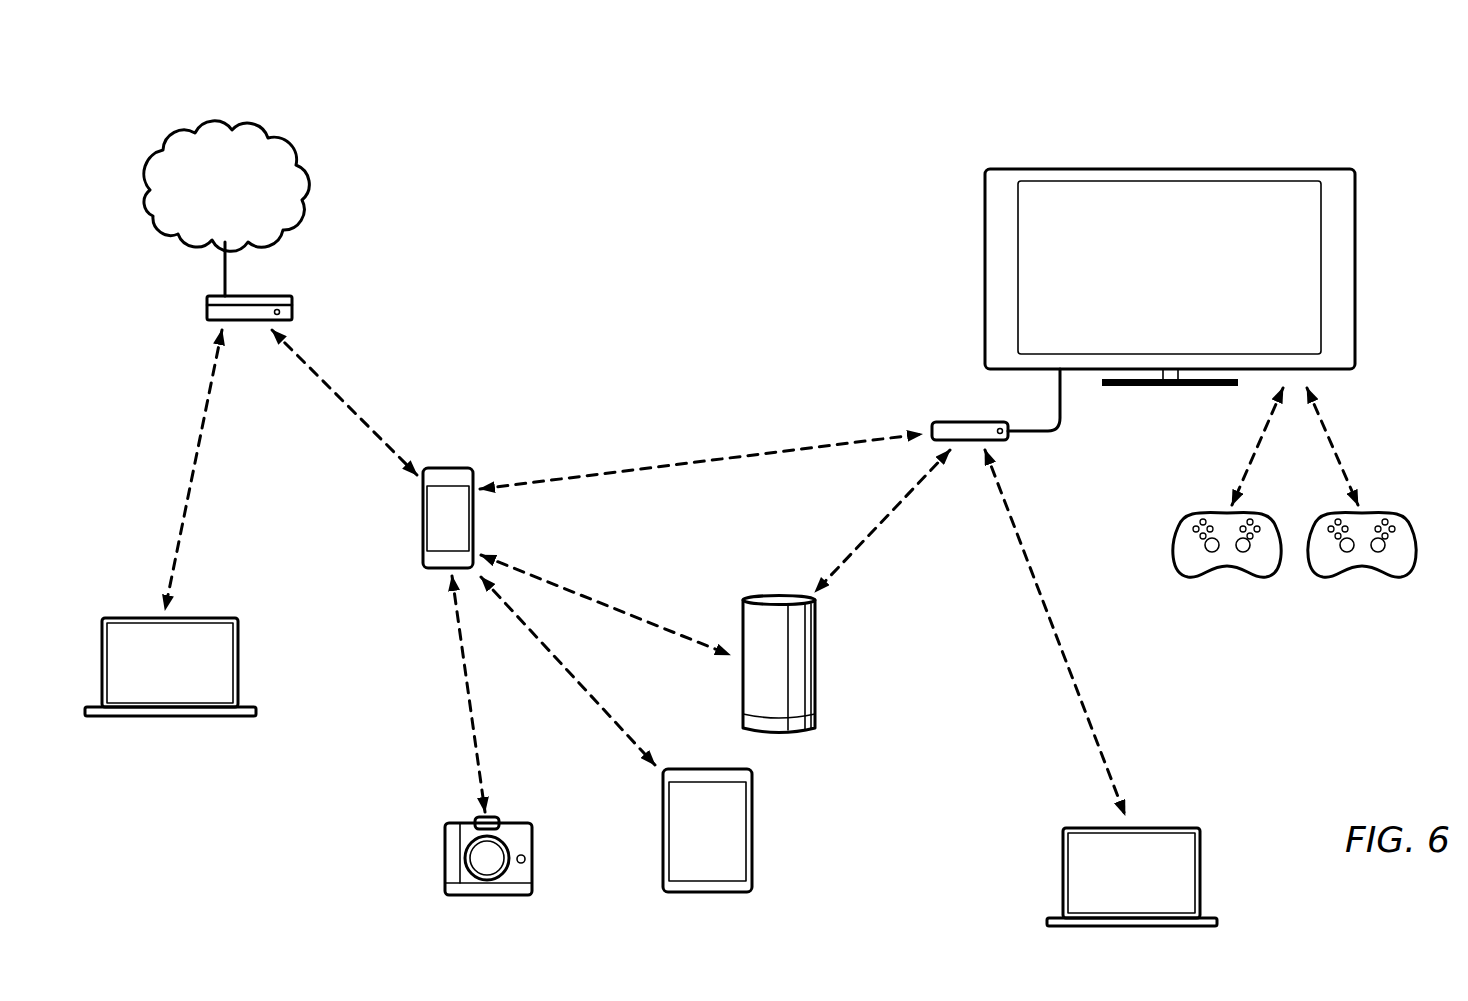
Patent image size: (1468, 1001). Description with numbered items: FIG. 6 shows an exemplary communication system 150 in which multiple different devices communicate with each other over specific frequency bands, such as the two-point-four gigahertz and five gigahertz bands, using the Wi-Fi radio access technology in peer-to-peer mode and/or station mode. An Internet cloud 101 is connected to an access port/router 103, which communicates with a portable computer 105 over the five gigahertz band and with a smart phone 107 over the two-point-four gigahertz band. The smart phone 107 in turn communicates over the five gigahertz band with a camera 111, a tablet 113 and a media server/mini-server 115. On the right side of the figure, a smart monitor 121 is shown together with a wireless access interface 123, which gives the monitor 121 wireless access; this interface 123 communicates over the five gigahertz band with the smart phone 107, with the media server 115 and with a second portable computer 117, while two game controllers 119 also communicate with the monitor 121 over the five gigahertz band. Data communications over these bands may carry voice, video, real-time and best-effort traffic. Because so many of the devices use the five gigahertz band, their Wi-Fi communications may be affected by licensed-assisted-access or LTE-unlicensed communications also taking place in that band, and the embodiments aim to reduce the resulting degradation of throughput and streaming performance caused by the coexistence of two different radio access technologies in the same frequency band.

The Internet 101 is at (303, 190).
The access port/router 103 is at (292, 300).
The portable computer 105 is at (238, 648).
The smart phone 107 is at (420, 520).
The camera 111 is at (445, 856).
The tablet 113 is at (663, 828).
The media server/mini-server 115 is at (743, 686).
The portable computer 117 is at (1063, 870).
The game controller 119 is at (1173, 555).
The smart monitor 121 is at (985, 258).
The wireless access interface 123 is at (952, 422).
The wireless network system 150 is at (1392, 100).